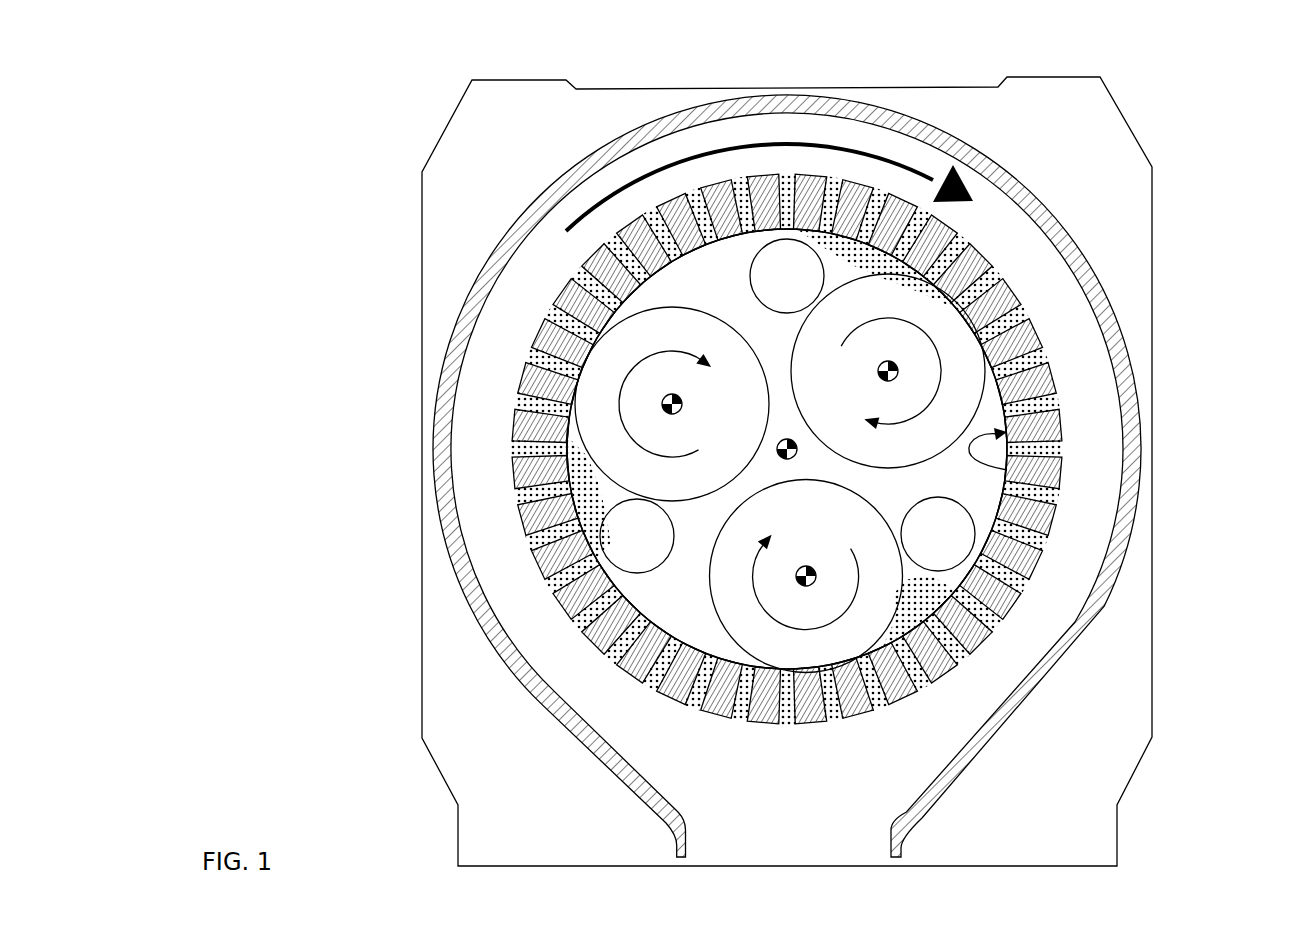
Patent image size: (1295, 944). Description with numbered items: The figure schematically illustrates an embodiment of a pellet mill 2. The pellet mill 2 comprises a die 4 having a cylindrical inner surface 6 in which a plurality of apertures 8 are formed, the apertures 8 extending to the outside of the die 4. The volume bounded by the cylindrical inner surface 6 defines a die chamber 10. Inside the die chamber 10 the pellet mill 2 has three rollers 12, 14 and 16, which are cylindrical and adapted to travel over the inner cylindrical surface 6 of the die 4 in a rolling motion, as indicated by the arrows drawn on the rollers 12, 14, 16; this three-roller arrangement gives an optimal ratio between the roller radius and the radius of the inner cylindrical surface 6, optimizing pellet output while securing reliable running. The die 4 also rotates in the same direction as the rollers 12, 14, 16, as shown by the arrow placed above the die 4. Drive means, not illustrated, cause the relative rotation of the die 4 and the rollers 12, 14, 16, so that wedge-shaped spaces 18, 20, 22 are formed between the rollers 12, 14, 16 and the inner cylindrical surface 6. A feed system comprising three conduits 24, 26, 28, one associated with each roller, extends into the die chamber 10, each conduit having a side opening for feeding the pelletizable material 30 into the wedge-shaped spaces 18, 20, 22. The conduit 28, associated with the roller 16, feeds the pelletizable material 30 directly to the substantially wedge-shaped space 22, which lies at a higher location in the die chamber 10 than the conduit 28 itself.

The pellet mill 2 is at (340, 146).
The die 4 is at (763, 187).
The cylindrical inner surface 6 is at (1013, 467).
The apertures 8 is at (1042, 356).
The die chamber 10 is at (687, 607).
The roller 12 is at (950, 337).
The roller 14 is at (682, 688).
The roller 16 is at (609, 372).
The wedge-shaped space 18 is at (913, 272).
The wedge-shaped space 20 is at (920, 672).
The wedge-shaped space 22 is at (577, 443).
The conduit 24 is at (776, 262).
The conduit 26 is at (955, 533).
The conduit 28 is at (640, 552).
The pelletizable material 30 is at (842, 242).